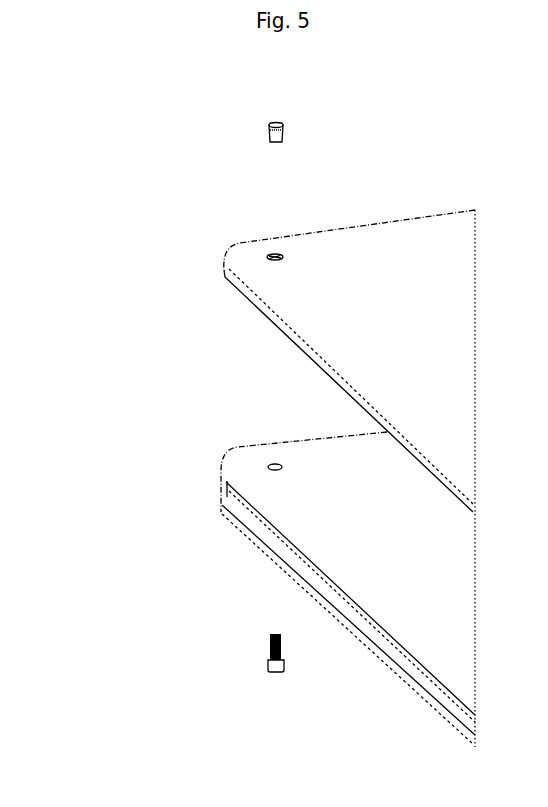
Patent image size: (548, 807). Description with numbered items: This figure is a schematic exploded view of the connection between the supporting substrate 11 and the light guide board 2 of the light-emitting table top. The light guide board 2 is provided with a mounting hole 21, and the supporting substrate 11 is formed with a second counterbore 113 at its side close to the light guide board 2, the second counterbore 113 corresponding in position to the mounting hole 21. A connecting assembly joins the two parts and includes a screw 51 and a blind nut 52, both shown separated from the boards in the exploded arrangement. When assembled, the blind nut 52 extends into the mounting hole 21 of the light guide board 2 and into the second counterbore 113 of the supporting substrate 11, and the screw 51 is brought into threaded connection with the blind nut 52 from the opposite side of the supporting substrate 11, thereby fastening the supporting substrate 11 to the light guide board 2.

The light guide board 2 is at (375, 272).
The mounting hole 21 is at (266, 256).
The blind nut 52 is at (268, 131).
The supporting substrate 11 is at (453, 675).
The second counterbore 113 is at (267, 465).
The screw 51 is at (268, 650).